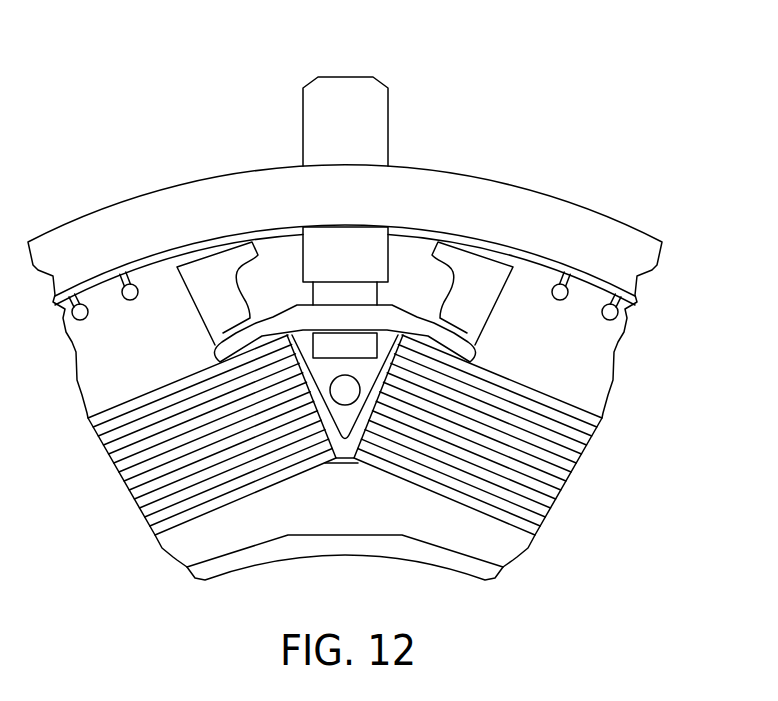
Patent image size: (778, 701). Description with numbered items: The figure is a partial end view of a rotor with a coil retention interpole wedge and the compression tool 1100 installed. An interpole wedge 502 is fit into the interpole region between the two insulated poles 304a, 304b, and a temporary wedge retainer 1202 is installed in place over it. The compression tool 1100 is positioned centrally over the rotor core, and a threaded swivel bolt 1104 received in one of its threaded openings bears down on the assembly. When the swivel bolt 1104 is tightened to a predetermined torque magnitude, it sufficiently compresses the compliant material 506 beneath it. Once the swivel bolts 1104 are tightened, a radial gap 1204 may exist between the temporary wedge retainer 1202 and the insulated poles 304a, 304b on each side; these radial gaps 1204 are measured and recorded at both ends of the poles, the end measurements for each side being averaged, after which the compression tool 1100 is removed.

The compression tool 1100 is at (641, 263).
The swivel bolt 1104 is at (343, 84).
The temporary wedge retainer 1202 is at (347, 316).
The radial gap 1204 is at (229, 333).
The compliant material 506 is at (302, 361).
The interpole wedge 502 is at (343, 423).
The insulated pole 304a is at (172, 357).
The insulated pole 304b is at (592, 365).